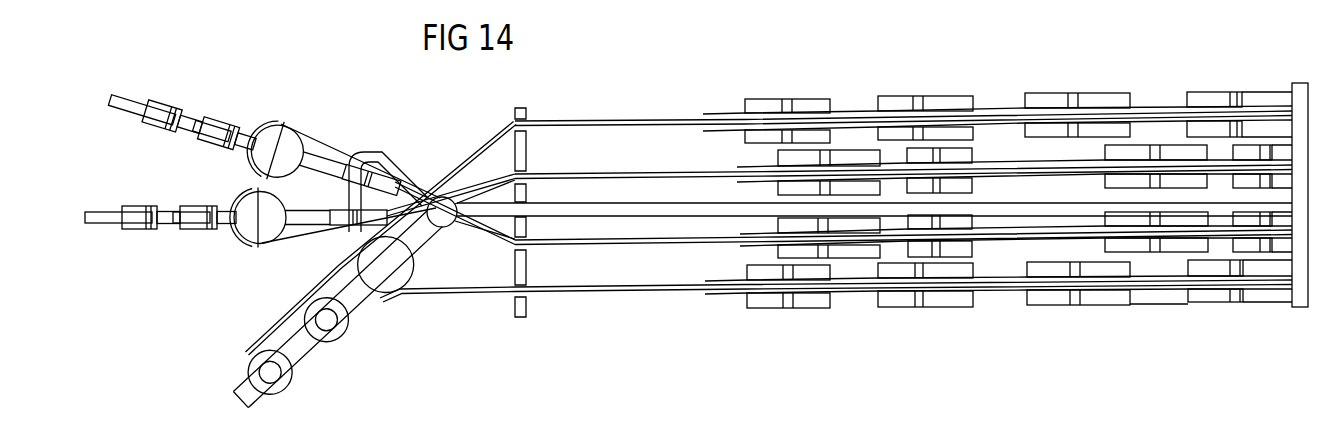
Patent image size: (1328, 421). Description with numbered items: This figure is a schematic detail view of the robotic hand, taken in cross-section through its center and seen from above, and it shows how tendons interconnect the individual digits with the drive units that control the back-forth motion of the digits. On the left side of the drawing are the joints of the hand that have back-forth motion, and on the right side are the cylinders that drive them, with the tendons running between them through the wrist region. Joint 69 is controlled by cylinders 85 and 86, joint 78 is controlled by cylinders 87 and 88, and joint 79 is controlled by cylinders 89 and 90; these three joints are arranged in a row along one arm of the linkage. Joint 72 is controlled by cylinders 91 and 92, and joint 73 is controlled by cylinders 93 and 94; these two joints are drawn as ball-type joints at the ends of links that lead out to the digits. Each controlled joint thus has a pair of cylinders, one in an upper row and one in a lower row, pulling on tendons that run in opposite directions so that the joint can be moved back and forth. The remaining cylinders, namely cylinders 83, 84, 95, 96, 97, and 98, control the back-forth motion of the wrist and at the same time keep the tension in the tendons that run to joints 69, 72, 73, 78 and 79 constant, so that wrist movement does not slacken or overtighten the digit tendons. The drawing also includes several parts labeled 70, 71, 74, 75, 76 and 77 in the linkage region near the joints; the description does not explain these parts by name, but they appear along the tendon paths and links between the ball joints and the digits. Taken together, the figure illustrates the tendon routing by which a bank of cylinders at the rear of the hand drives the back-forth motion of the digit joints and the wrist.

The joint 69 is at (393, 297).
The bracket 70 is at (351, 168).
The cable clamp 71 is at (339, 240).
The joint 72 is at (276, 130).
The joint 73 is at (280, 236).
The cable clamp 74 is at (232, 94).
The cable clamp 75 is at (188, 242).
The cable clamp 76 is at (159, 75).
The cable clamp 77 is at (121, 242).
The joint 78 is at (330, 340).
The joint 79 is at (280, 385).
The cylinder 83 is at (1207, 98).
The cylinder 84 is at (1215, 293).
The cylinder 85 is at (1050, 103).
The cylinder 86 is at (1058, 295).
The cylinder 87 is at (900, 105).
The cylinder 88 is at (910, 300).
The cylinder 89 is at (758, 105).
The cylinder 90 is at (768, 300).
The cylinder 91 is at (842, 162).
The cylinder 92 is at (868, 248).
The cylinder 93 is at (1172, 153).
The cylinder 94 is at (1182, 238).
The cylinder 95 is at (958, 160).
The cylinder 96 is at (958, 245).
The cylinder 97 is at (1278, 155).
The cylinder 98 is at (1278, 238).